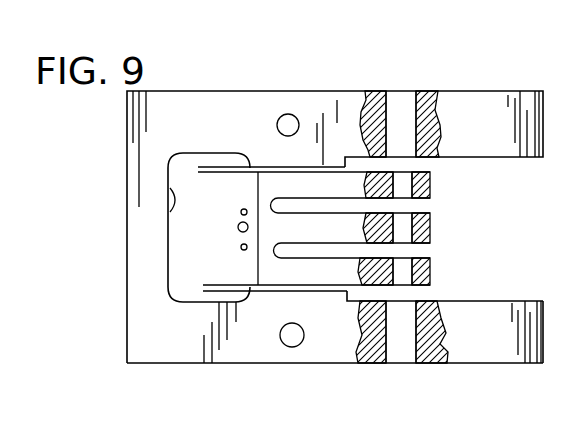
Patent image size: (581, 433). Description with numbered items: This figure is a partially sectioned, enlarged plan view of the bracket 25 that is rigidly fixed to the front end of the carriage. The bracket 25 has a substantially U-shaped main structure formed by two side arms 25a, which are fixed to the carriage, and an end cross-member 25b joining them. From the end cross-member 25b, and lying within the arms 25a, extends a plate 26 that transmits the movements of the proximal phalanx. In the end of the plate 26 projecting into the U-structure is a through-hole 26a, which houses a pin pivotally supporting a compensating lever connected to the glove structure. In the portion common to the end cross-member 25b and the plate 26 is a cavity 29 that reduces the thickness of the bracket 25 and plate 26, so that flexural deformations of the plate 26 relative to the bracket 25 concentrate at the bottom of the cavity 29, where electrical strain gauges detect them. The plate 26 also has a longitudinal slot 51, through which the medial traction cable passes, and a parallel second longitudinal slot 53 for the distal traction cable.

The bracket 25 is at (118, 97).
The side arms 25a is at (452, 118).
The end cross-member 25b is at (141, 243).
The plate 26 is at (273, 263).
The through-hole 26a is at (412, 233).
The cavity 29 is at (168, 184).
The longitudinal slot 51 is at (337, 258).
The second longitudinal slot 53 is at (333, 200).